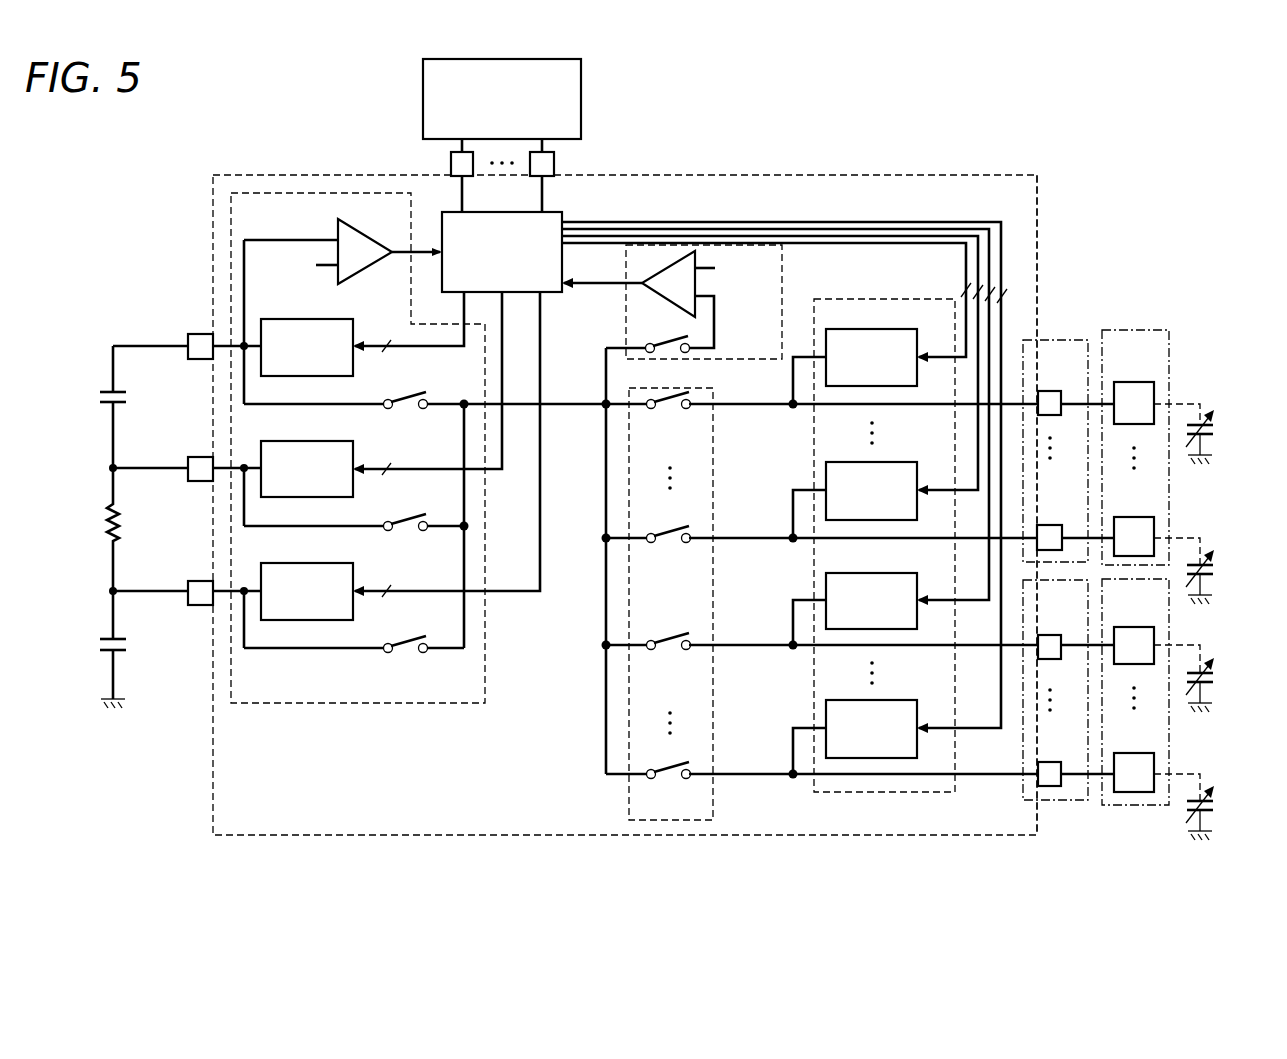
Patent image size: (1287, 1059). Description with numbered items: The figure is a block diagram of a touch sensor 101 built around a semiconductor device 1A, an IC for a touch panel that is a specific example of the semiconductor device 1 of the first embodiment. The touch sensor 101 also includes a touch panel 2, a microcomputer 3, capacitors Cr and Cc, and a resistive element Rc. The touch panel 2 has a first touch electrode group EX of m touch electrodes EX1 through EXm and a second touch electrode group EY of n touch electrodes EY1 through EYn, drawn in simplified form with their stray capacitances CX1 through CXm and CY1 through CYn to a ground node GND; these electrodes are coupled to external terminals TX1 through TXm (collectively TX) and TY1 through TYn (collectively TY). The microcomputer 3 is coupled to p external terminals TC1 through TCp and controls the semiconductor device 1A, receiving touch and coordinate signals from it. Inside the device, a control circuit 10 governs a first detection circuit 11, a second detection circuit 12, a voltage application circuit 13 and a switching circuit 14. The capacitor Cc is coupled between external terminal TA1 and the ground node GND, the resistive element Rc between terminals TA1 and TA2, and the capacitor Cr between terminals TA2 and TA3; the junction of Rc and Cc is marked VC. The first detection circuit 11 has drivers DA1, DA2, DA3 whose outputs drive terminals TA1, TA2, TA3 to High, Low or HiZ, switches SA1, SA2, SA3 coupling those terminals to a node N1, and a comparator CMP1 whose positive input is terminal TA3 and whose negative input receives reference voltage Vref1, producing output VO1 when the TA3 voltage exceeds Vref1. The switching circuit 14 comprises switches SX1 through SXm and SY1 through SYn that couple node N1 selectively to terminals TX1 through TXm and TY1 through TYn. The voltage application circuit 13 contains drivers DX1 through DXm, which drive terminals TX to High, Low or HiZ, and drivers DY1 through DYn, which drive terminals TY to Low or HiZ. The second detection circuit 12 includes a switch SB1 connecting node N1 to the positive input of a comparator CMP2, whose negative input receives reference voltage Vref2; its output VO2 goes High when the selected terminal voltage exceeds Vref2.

The touch sensor 101 is at (113, 138).
The semiconductor device 1 is at (238, 175).
The semiconductor device 1A is at (985, 176).
The touch panel 2 is at (1197, 302).
The microcomputer 3 is at (584, 101).
The control circuit 10 is at (560, 212).
The first detection circuit 11 is at (448, 704).
The second detection circuit 12 is at (785, 258).
The voltage application circuit 13 is at (926, 298).
The switching circuit 14 is at (628, 800).
The external terminal TC1 is at (450, 164).
The external terminal TCp is at (556, 164).
The comparator CMP1 is at (368, 233).
The comparator CMP2 is at (660, 297).
The output signal of comparator CMP1 VO1 is at (291, 307).
The output signal of comparator CMP2 VO2 is at (726, 325).
The reference voltage Vref1 is at (299, 265).
The reference voltage Vref2 is at (734, 268).
The external terminal TA1 is at (197, 581).
The external terminal TA2 is at (197, 457).
The external terminal TA3 is at (197, 334).
The driver DA1 is at (300, 563).
The driver DA2 is at (300, 441).
The driver DA3 is at (300, 319).
The switch SA1 is at (407, 657).
The switch SA2 is at (407, 535).
The switch SA3 is at (407, 413).
The switch SB1 is at (668, 353).
The node N1 is at (464, 400).
The capacitor Cr is at (100, 390).
The resistive element Rc is at (102, 520).
The capacitor Cc is at (100, 637).
The voltage node VC is at (108, 591).
The ground node GND is at (113, 717).
The switch SX1 is at (670, 413).
The switch SXm is at (670, 546).
The switch SY1 is at (670, 654).
The switch SYn is at (670, 783).
The driver DX1 is at (880, 329).
The driver DXm is at (880, 462).
The driver DY1 is at (880, 573).
The driver DYn is at (880, 700).
The external terminal TX is at (1072, 338).
The external terminal TX1 is at (1052, 390).
The external terminal TXm is at (1052, 524).
The external terminal TY is at (1070, 805).
The external terminal TY1 is at (1052, 634).
The external terminal TYn is at (1052, 761).
The first touch electrode group EX is at (1147, 328).
The touch electrode EX1 is at (1134, 381).
The touch electrode EXm is at (1134, 516).
The second touch electrode group EY is at (1148, 810).
The touch electrode EY1 is at (1134, 626).
The touch electrode EYn is at (1134, 752).
The stray capacitance CX1 is at (1210, 437).
The stray capacitance CXm is at (1212, 571).
The stray capacitance CY1 is at (1210, 680).
The stray capacitance CYn is at (1210, 808).